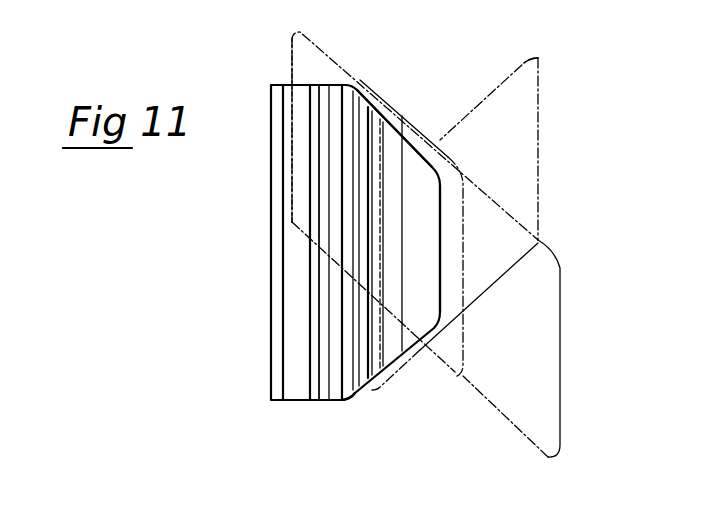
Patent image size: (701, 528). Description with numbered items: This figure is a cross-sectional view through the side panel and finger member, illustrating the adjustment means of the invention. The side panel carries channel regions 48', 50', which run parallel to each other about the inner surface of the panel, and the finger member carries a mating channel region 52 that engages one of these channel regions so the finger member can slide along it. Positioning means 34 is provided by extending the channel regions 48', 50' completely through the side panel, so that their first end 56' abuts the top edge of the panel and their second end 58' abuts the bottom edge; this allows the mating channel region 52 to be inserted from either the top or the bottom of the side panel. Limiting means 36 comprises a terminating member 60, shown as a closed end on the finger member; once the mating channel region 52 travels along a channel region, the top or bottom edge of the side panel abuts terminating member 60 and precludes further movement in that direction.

The positioning means 34 is at (298, 289).
The means for limiting slidable movement 36 is at (404, 140).
The channel region 48' is at (254, 218).
The channel region 50' is at (336, 211).
The mating channel region 52 is at (402, 116).
The first end of the channel regions 56' is at (400, 104).
The second end of the channel regions 58' is at (349, 418).
The terminating member 60 is at (450, 148).